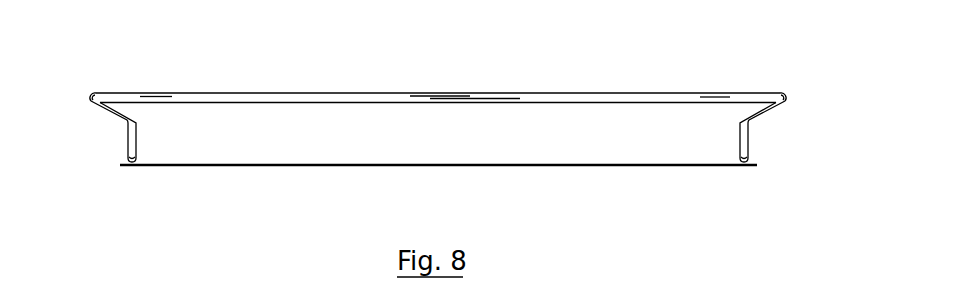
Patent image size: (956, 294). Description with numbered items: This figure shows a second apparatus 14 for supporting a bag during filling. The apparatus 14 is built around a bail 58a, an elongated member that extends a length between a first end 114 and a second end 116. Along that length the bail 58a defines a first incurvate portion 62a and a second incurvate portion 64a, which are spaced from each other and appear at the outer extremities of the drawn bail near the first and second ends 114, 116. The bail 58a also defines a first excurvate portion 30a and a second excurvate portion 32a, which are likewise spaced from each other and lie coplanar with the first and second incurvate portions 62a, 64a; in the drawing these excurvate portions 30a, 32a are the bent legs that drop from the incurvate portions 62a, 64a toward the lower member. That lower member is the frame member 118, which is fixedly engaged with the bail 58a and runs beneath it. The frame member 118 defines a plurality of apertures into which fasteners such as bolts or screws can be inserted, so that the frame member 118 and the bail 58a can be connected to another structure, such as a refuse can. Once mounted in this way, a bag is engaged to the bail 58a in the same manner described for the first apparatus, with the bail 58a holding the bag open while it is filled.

The apparatus 14 is at (822, 83).
The bail 58a is at (337, 98).
The first incurvate portion 62a is at (87, 102).
The second incurvate portion 64a is at (787, 99).
The first excurvate portion 30a is at (137, 121).
The second excurvate portion 32a is at (738, 119).
The first end 114 is at (107, 164).
The second end 116 is at (762, 152).
The frame member 118 is at (332, 166).